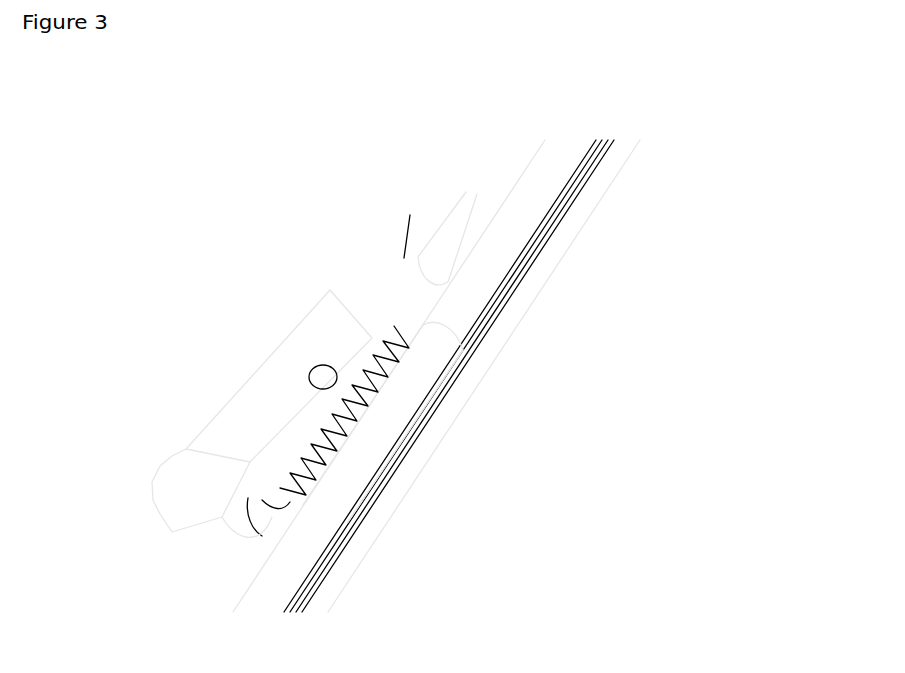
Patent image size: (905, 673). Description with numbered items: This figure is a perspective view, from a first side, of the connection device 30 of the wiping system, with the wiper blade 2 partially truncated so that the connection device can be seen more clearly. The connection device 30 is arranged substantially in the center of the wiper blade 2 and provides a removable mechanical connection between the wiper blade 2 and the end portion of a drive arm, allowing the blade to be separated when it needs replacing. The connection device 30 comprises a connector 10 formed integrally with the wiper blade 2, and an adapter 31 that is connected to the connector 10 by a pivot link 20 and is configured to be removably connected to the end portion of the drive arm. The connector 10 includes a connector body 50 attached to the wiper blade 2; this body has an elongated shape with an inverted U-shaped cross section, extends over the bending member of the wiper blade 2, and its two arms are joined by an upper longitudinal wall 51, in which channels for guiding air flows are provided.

The wiper blade 2 is at (600, 237).
The connector 10 is at (387, 398).
The connector body 50 is at (383, 423).
The pivot link 20 is at (323, 377).
The connection device 30 is at (288, 265).
The adapter 31 is at (246, 405).
The upper longitudinal wall 51 is at (272, 512).